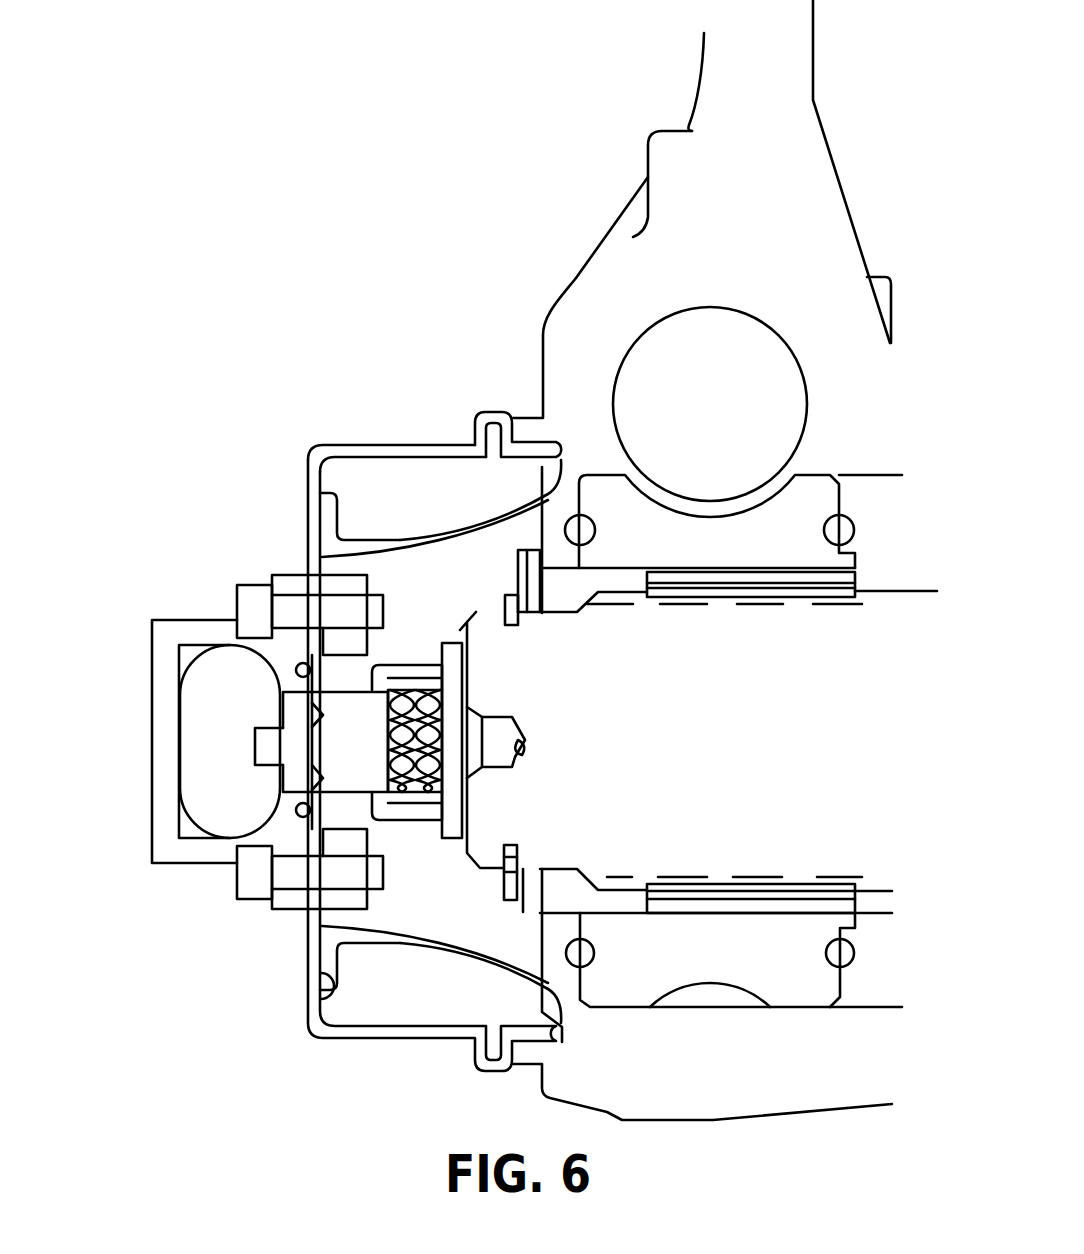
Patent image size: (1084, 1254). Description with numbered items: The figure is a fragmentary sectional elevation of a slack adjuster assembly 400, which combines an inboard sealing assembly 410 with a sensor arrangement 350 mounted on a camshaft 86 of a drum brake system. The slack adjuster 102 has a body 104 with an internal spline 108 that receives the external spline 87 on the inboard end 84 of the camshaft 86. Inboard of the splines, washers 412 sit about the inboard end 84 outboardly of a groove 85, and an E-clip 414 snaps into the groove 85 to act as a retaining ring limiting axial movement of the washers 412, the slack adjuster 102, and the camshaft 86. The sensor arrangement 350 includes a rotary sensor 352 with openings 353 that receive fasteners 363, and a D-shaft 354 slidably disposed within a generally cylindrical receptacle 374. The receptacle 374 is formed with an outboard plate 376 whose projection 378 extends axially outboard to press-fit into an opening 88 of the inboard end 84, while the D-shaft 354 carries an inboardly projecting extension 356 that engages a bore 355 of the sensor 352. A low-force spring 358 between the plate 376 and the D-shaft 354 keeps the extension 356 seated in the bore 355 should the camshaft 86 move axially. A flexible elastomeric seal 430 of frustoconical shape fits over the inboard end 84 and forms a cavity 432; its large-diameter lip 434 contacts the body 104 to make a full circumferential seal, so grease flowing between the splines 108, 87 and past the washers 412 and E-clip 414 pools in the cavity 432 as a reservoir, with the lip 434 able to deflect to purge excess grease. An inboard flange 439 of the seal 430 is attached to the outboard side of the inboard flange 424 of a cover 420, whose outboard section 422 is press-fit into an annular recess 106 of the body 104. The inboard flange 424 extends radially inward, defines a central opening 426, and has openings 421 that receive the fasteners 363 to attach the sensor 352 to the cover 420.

The inboard end 84 is at (557, 612).
The groove 85 is at (505, 608).
The camshaft 86 is at (882, 580).
The external spline 87 is at (612, 890).
The opening 88 is at (525, 762).
The slack adjuster 102 is at (845, 178).
The body 104 is at (573, 281).
The annular recess 106 is at (557, 1030).
The internal spline 108 is at (757, 882).
The sensor arrangement 350 is at (380, 645).
The rotary sensor 352 is at (177, 617).
The openings 353 is at (277, 595).
The D-shaft 354 is at (358, 813).
The bore 355 is at (258, 757).
The extension 356 is at (288, 730).
The low-force spring 358 is at (427, 757).
The fasteners 363 is at (237, 600).
The receptacle 374 is at (410, 663).
The outboard plate 376 is at (455, 840).
The projection 378 is at (482, 720).
The slack adjuster assembly 400 is at (318, 218).
The inboard sealing assembly 410 is at (292, 374).
The washers 412 is at (527, 612).
The E-clip 414 is at (510, 595).
The cover 420 is at (447, 436).
The openings 421 is at (316, 595).
The outboard section 422 is at (380, 445).
The inboard flange 424 is at (308, 487).
The central opening 426 is at (320, 683).
The seal 430 is at (428, 957).
The cavity 432 is at (472, 942).
The lip 434 is at (553, 461).
The inboard flange 439 is at (340, 997).